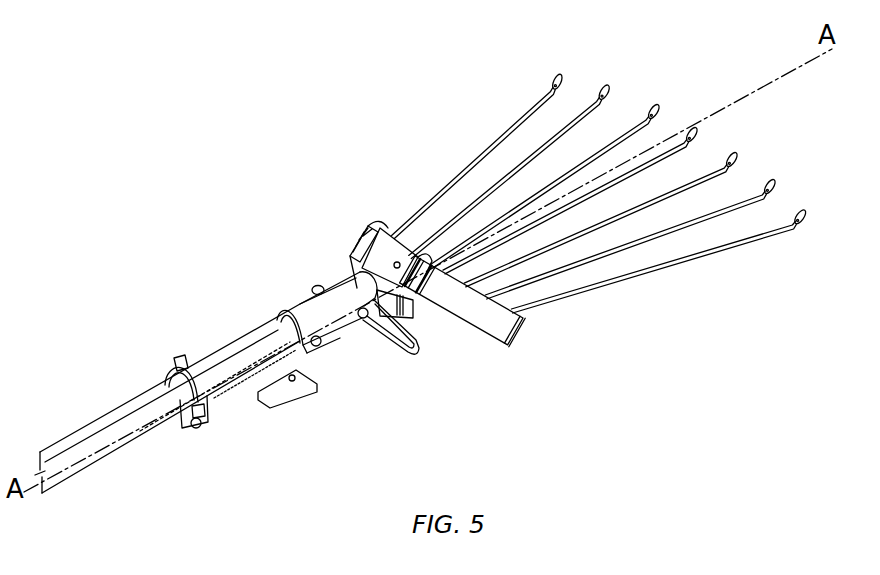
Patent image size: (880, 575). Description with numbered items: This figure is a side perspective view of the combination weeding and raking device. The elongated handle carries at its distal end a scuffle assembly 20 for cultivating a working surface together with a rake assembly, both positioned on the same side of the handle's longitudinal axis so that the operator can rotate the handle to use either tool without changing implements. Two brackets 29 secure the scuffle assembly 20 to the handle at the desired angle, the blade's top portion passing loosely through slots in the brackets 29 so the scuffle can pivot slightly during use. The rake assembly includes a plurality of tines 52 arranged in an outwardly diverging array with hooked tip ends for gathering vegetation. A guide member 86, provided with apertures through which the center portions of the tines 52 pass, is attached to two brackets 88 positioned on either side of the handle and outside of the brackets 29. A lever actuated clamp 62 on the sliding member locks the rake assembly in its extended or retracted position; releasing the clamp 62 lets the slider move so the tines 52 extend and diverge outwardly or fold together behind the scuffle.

The bracket 29 is at (322, 317).
The lever actuated clamp 62 is at (184, 433).
The bracket 88 is at (333, 326).
The guide member 86 is at (401, 360).
The scuffle assembly 20 is at (488, 353).
The tines 52 is at (672, 268).